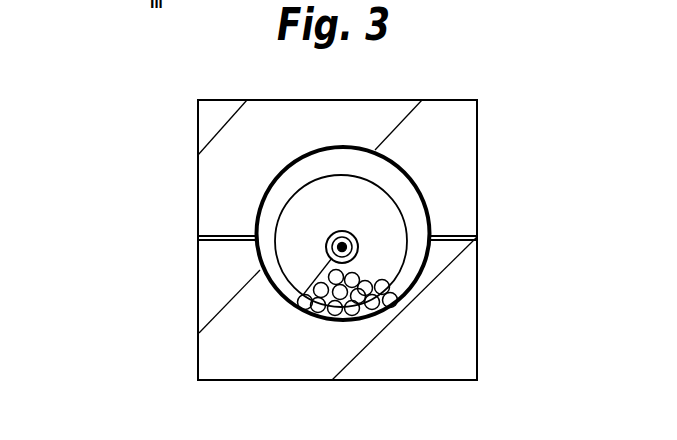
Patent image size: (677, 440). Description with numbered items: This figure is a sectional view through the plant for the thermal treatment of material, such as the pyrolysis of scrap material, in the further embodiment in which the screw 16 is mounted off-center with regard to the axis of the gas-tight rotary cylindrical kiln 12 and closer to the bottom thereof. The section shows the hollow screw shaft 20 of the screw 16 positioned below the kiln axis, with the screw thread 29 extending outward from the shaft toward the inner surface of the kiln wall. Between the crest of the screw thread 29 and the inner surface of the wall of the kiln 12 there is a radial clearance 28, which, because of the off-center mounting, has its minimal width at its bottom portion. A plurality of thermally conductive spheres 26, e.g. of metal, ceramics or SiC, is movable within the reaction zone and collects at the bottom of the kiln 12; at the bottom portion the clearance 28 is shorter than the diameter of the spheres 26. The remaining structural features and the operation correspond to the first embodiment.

The rotary cylindrical kiln 12 is at (397, 163).
The screw 16 is at (393, 260).
The screw shaft 20 is at (326, 247).
The spheres 26 is at (313, 317).
The radial clearance 28 is at (290, 175).
The screw thread 29 is at (375, 250).